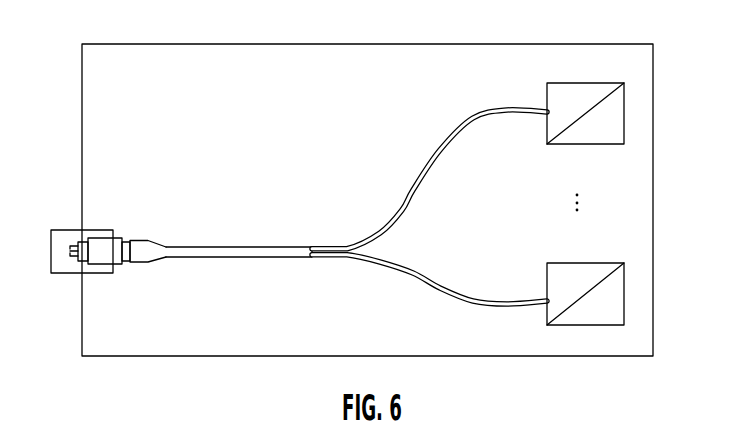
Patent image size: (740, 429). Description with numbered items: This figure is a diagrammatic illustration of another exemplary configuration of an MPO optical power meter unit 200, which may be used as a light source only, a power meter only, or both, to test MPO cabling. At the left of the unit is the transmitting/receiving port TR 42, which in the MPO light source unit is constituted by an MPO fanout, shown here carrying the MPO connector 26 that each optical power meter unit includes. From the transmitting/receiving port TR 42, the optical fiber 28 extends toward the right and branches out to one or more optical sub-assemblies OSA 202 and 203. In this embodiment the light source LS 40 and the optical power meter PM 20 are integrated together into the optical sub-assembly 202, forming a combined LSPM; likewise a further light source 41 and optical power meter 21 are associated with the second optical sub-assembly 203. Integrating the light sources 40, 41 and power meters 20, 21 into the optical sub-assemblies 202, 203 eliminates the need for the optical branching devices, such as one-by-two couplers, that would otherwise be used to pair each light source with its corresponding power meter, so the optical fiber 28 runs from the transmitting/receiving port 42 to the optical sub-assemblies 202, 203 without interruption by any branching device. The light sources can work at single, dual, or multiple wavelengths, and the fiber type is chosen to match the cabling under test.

The MPO optical power meter unit 200 is at (460, 44).
The optical sub-assembly 202 is at (564, 115).
The optical sub-assembly 203 is at (568, 292).
The optical power meter 20 is at (585, 144).
The optical power meter 21 is at (565, 325).
The light source 40 is at (550, 128).
The light source 41 is at (553, 280).
The MPO connector 26 is at (98, 245).
The MPO fiber 28 is at (191, 243).
The transmitting/receiving port 42 is at (60, 274).